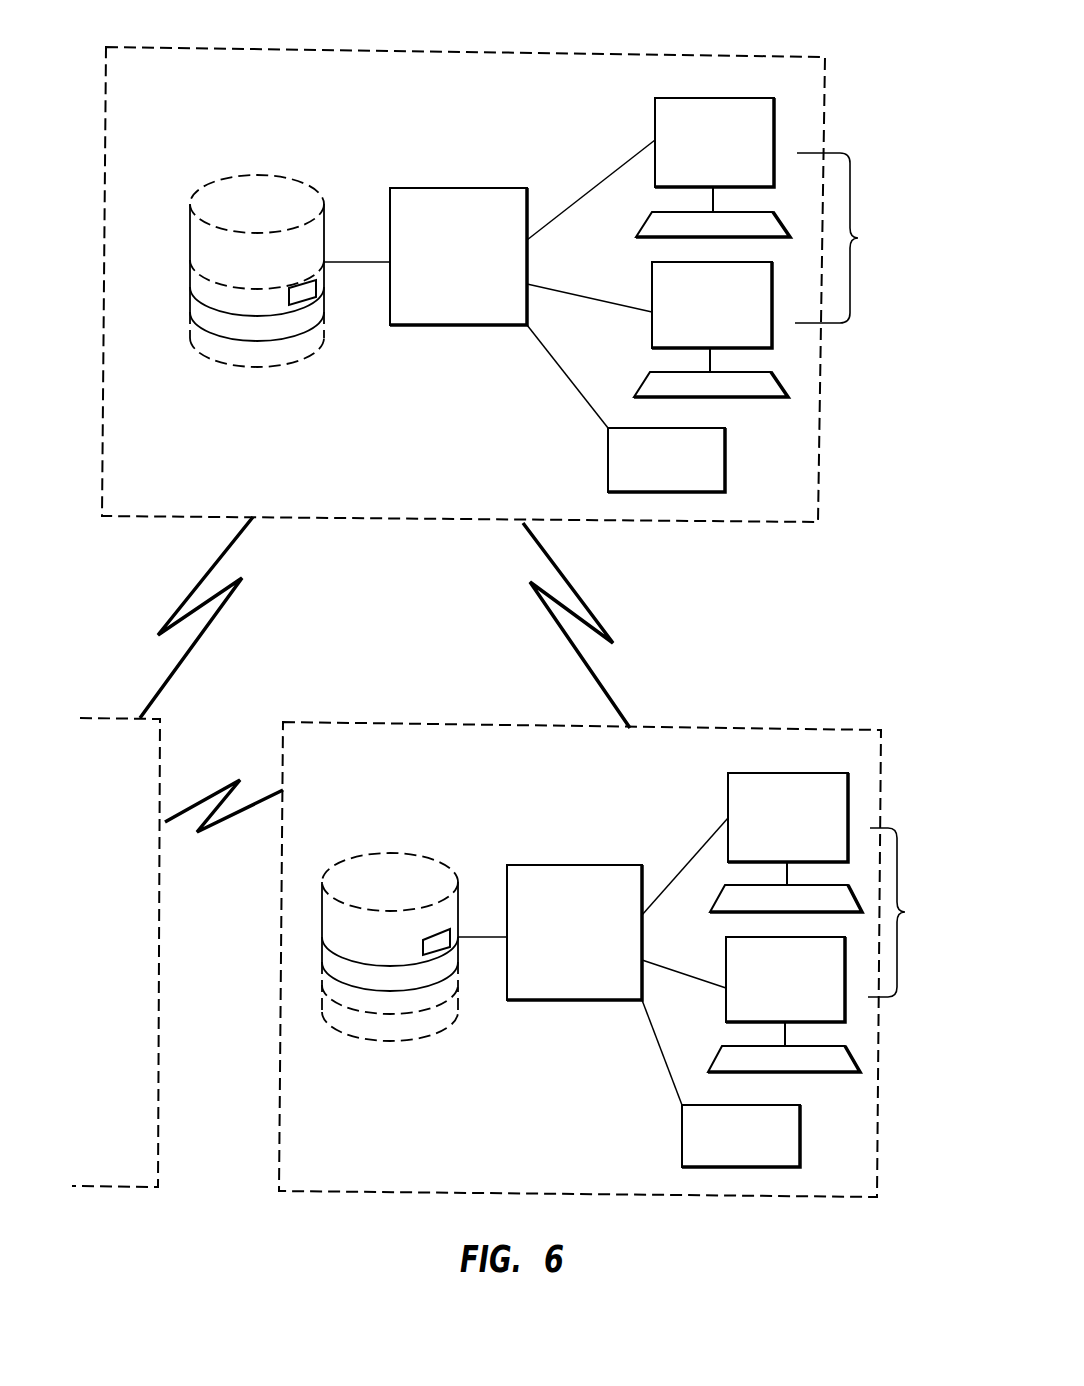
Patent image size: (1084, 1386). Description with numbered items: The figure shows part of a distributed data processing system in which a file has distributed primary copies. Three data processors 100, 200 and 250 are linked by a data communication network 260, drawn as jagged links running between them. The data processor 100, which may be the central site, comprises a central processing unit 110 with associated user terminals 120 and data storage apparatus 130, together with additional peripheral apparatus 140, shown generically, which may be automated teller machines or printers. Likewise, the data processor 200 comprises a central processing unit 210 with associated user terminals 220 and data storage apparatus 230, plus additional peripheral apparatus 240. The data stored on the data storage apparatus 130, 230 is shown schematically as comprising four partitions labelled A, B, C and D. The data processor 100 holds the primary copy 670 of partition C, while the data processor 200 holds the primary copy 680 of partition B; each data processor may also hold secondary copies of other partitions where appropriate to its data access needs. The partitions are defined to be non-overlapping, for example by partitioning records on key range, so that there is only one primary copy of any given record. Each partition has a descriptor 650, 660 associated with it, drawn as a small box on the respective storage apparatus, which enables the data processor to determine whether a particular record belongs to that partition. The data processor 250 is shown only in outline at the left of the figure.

The data processor 100 is at (723, 57).
The central processing unit 110 is at (490, 327).
The user terminals 120 is at (764, 247).
The data storage apparatus 130 is at (248, 283).
The additional peripheral apparatus 140 is at (608, 473).
The descriptor 650 is at (305, 297).
The primary copy of partition C 670 is at (190, 280).
The data processor 200 is at (799, 728).
The central processing unit 210 is at (604, 1003).
The user terminals 220 is at (827, 922).
The data storage apparatus 230 is at (366, 938).
The additional peripheral apparatus 240 is at (682, 1148).
The data processor 250 is at (108, 716).
The data communication network 260 is at (202, 640).
The descriptor 660 is at (447, 937).
The primary copy of partition B 680 is at (328, 928).